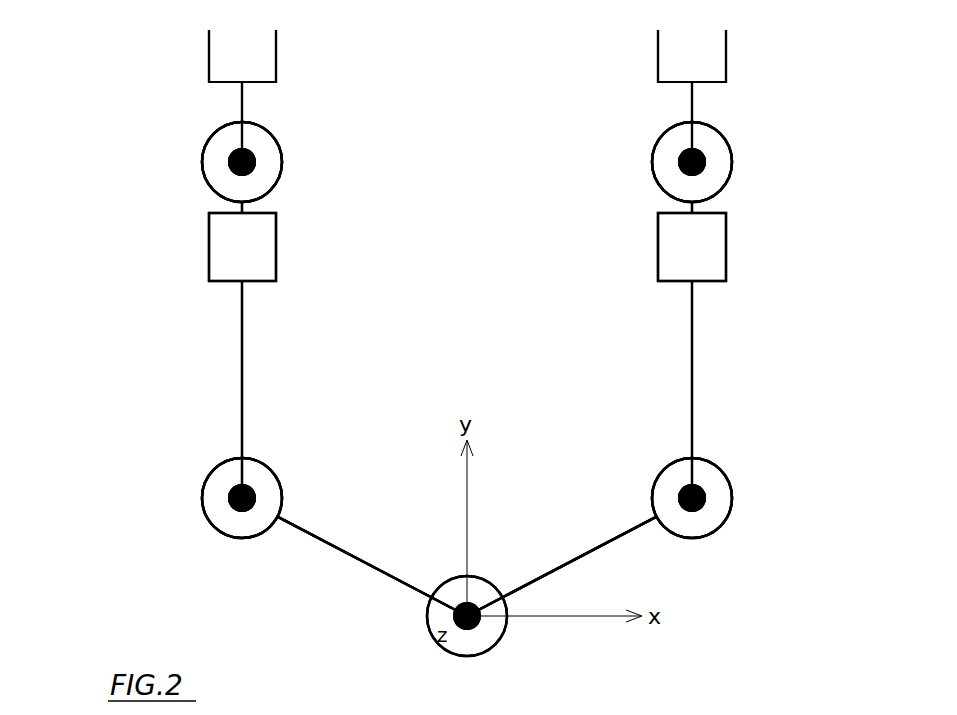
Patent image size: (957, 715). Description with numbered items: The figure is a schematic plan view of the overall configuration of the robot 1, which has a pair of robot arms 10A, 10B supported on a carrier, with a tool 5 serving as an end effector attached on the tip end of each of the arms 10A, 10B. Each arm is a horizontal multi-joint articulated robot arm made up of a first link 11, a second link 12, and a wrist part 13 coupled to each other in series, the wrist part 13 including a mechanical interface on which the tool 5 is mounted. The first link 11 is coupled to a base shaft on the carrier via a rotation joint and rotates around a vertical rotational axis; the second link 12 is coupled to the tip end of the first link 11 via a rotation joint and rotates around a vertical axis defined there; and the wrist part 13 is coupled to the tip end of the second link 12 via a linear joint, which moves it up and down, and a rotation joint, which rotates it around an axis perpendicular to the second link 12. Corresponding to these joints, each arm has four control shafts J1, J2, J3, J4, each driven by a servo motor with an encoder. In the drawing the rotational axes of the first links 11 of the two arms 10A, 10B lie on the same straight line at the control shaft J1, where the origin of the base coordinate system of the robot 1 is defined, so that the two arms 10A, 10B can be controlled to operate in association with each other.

The robot 1 is at (733, 613).
The robot arm 10A is at (780, 373).
The robot arm 10B is at (153, 373).
The tool 5 is at (209, 57).
The control shaft J4 is at (202, 162).
The wrist part 13 is at (190, 229).
The control shaft J3 is at (208, 272).
The second link 12 is at (242, 380).
The control shaft J2 is at (208, 520).
The first link 11 is at (325, 543).
The control shaft J1 is at (493, 648).